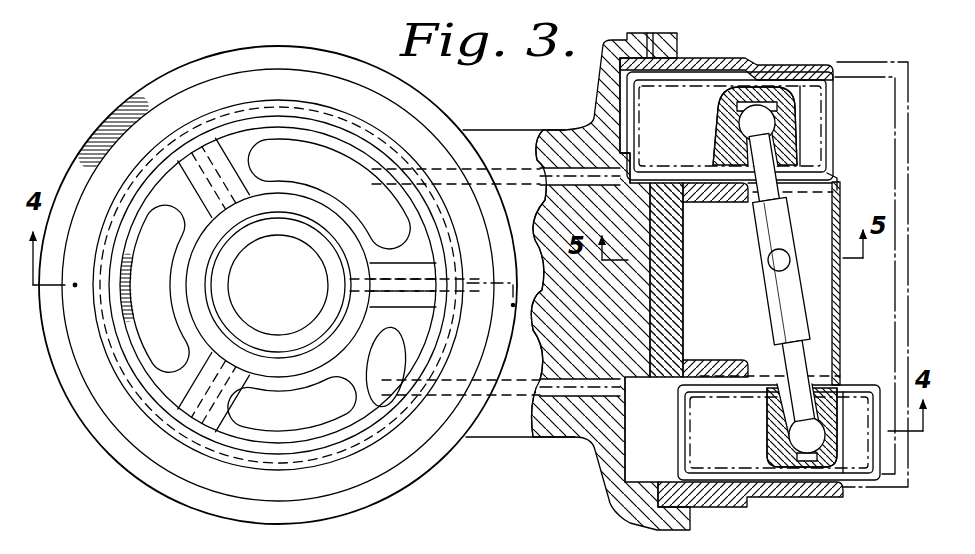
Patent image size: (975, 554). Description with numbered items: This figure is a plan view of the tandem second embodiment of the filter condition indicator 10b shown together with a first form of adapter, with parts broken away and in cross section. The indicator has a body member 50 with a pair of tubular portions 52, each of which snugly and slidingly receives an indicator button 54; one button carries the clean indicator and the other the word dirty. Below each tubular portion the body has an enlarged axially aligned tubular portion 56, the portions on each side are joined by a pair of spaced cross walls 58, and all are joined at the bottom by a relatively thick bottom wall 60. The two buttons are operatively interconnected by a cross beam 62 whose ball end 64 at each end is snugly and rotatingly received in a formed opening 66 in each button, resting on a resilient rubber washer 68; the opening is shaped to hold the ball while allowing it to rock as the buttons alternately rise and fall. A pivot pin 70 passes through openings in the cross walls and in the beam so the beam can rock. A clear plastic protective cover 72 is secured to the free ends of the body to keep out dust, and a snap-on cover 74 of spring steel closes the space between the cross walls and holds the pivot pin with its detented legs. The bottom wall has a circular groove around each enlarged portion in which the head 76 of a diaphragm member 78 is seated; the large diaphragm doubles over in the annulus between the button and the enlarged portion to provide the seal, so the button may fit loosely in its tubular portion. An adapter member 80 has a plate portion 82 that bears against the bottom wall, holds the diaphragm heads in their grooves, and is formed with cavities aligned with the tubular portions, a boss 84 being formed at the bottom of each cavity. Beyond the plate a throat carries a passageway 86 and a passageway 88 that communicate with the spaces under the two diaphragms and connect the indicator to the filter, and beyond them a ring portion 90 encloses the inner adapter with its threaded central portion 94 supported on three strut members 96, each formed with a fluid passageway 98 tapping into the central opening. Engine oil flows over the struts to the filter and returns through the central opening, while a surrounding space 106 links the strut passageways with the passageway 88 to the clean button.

The second embodiment of the indicator 10b is at (815, 40).
The body member 50 is at (743, 518).
The tubular portions 52 is at (758, 100).
The indicator button 54 is at (830, 88).
The enlarged tubular portion 56 is at (697, 58).
The cross walls 58 is at (835, 198).
The bottom wall 60 is at (683, 241).
The cross beam 62 is at (752, 240).
The ball end 64 is at (757, 108).
The formed opening 66 is at (716, 165).
The resilient washers 68 is at (788, 100).
The pivot pin 70 is at (782, 258).
The protective cover 72 is at (882, 62).
The snap-on cover 74 is at (836, 314).
The head of the diaphragm member 76 is at (650, 352).
The diaphragm member 78 is at (678, 400).
The adapter member 80 is at (519, 442).
The plate portion 82 is at (620, 508).
The boss 84 is at (640, 120).
The passageway 86 is at (563, 185).
The passageway 88 is at (598, 381).
The ring portion 90 is at (114, 455).
The central portion 94 is at (292, 392).
The strut members 96 is at (173, 182).
The fluid passageway 98 is at (210, 142).
The space 106 is at (457, 345).